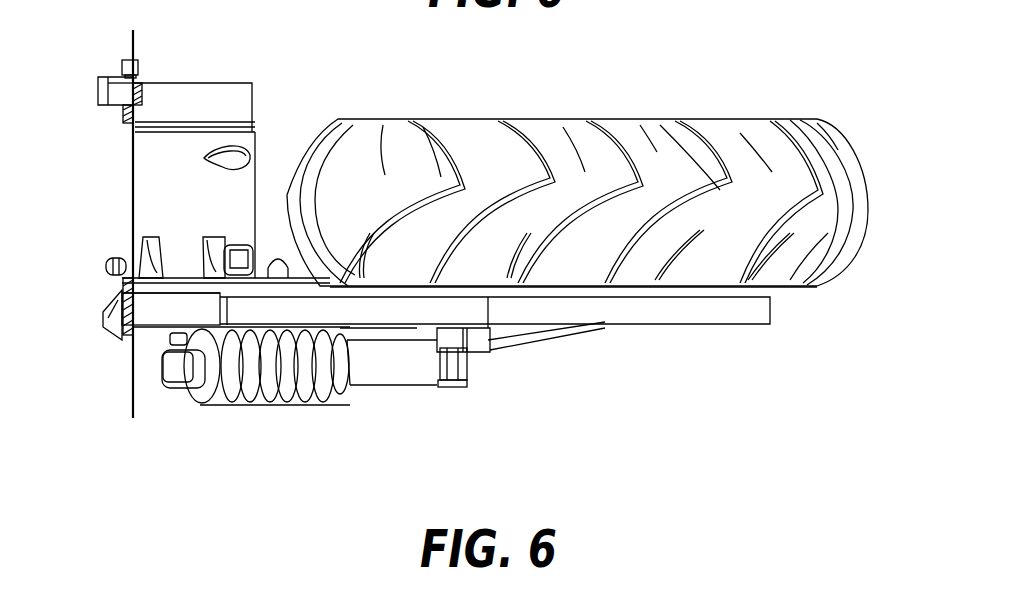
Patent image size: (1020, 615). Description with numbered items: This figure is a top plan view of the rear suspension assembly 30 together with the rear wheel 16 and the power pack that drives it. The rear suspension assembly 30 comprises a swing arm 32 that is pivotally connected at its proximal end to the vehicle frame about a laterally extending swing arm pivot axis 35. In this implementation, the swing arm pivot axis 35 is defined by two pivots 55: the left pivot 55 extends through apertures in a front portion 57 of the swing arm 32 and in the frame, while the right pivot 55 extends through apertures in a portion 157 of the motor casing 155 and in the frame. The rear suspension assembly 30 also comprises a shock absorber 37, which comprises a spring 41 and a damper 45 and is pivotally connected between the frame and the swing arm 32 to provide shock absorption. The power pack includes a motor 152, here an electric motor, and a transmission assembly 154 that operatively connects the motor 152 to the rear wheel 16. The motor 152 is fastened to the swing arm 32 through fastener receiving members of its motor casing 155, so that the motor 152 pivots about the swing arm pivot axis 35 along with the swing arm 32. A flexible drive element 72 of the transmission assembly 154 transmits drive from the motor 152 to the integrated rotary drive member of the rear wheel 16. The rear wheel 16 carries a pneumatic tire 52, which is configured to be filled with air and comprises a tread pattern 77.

The rear wheel 16 is at (675, 119).
The rear suspension assembly 30 is at (460, 387).
The swing arm 32 is at (497, 347).
The swing arm pivot axis 35 is at (133, 410).
The shock absorber 37 is at (343, 390).
The spring 41 is at (265, 404).
The damper 45 is at (407, 385).
The tire 52 is at (724, 147).
The pivot 55 is at (120, 62).
The front portion 57 is at (103, 332).
The flexible drive element 72 is at (760, 308).
The tread pattern 77 is at (835, 182).
The motor 152 is at (175, 145).
The transmission assembly 154 is at (320, 310).
The motor casing 155 is at (155, 100).
The portion of the motor casing 157 is at (100, 97).